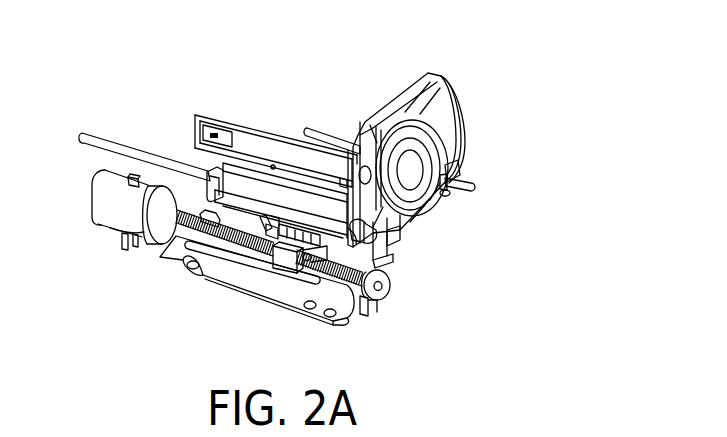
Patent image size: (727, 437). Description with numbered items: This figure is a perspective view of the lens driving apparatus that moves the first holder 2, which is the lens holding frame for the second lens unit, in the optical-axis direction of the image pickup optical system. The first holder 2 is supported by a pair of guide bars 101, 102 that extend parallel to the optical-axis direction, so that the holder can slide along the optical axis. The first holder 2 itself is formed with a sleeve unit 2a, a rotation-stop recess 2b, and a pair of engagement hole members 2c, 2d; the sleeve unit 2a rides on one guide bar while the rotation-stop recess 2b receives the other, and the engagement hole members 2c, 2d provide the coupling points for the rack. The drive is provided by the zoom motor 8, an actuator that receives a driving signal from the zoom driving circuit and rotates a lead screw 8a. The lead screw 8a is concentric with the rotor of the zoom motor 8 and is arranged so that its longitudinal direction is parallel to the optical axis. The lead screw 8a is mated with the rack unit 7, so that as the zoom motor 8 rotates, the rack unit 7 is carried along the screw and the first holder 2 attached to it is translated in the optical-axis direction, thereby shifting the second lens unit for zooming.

The guide bar 101 is at (103, 143).
The sleeve unit 2a is at (218, 168).
The first holder 2 is at (430, 90).
The rotation-stop recess 2b is at (457, 152).
The guide bar 102 is at (467, 192).
The zoom motor 8 is at (132, 212).
The lead screw 8a is at (195, 268).
The engagement hole member 2c is at (240, 250).
The rack unit 7 is at (287, 264).
The engagement hole member 2d is at (345, 295).